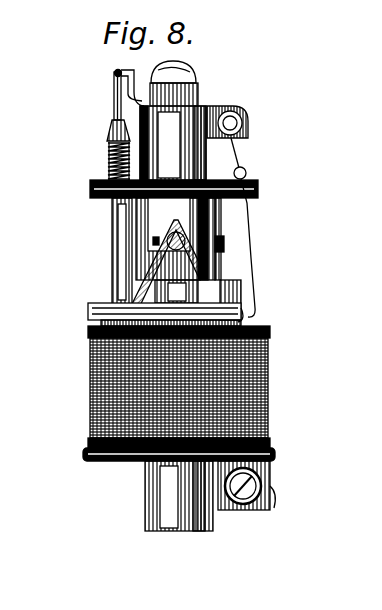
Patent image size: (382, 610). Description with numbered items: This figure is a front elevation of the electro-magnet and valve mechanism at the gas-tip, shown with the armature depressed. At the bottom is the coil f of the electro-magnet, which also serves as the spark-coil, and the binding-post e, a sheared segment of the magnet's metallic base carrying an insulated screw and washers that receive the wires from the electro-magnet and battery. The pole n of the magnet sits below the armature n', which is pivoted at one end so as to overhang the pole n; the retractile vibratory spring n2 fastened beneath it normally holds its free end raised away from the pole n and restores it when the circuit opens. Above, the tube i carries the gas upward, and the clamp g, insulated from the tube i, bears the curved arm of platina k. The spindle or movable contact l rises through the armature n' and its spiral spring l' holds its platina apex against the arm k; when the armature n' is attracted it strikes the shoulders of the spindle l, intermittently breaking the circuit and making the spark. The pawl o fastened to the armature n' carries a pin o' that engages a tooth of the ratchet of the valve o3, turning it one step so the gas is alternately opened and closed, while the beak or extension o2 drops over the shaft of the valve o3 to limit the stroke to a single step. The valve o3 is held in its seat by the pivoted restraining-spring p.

The tube i is at (173, 120).
The curved arm or projection of platina k is at (106, 66).
The spindle or movable contact l is at (93, 96).
The spiral spring l' is at (93, 213).
The clamp g is at (227, 111).
The valve o3 is at (165, 216).
The pin o' is at (119, 245).
The pivoted restraining-spring p is at (213, 237).
The beak or extension o2 is at (214, 245).
The pawl o is at (157, 295).
The armature n' is at (146, 307).
The retractile vibratory spring n2 is at (95, 315).
The pole n is at (257, 310).
The coil of the electro-magnet f is at (80, 378).
The binding-post e is at (234, 492).